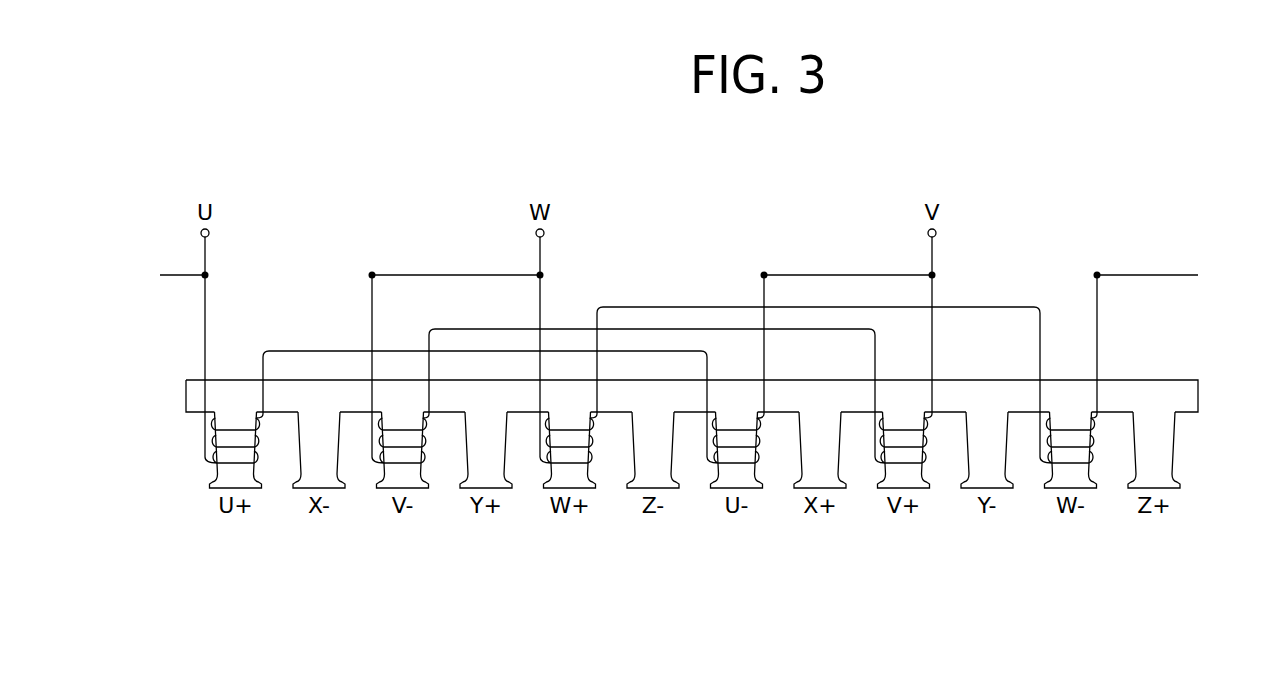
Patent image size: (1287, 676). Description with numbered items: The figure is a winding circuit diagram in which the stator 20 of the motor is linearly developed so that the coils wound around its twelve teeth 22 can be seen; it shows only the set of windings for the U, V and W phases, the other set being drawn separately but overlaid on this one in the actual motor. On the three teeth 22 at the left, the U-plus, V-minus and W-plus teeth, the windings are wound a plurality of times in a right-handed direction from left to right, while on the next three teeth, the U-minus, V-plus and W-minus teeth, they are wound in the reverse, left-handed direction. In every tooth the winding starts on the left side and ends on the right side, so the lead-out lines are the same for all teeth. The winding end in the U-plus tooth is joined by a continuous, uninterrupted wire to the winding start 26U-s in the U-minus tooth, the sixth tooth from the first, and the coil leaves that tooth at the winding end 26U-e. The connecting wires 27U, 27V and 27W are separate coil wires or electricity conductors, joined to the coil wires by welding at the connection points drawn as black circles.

The stator 20 is at (713, 437).
The tooth 22 is at (1170, 490).
The winding start in U− 26U-s is at (707, 372).
The winding end in U− 26U-e is at (764, 348).
The connecting wire 27W is at (493, 274).
The connecting wire 27V is at (780, 275).
The connecting wire 27U is at (1175, 275).